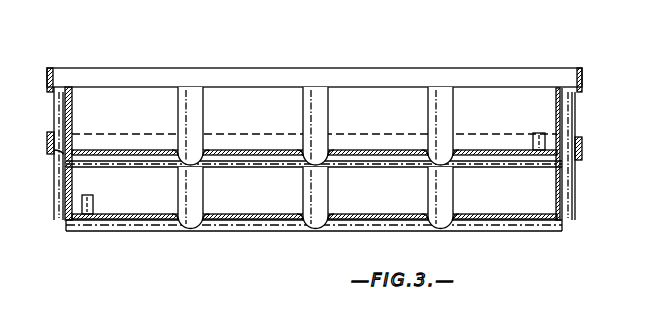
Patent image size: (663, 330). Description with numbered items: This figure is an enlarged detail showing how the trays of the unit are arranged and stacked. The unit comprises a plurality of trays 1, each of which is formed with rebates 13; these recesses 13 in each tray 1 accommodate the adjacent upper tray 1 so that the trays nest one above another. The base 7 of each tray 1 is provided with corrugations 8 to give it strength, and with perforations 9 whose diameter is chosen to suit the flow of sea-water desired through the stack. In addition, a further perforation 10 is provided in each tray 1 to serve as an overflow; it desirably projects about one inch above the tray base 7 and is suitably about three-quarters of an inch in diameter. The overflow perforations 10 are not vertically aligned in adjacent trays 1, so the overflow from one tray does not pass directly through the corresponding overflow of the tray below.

The tray 1 is at (557, 108).
The base 7 is at (473, 214).
The corrugation 8 is at (148, 231).
The perforation 9 is at (190, 231).
The overflow perforation 10 is at (93, 205).
The rebate 13 is at (70, 146).